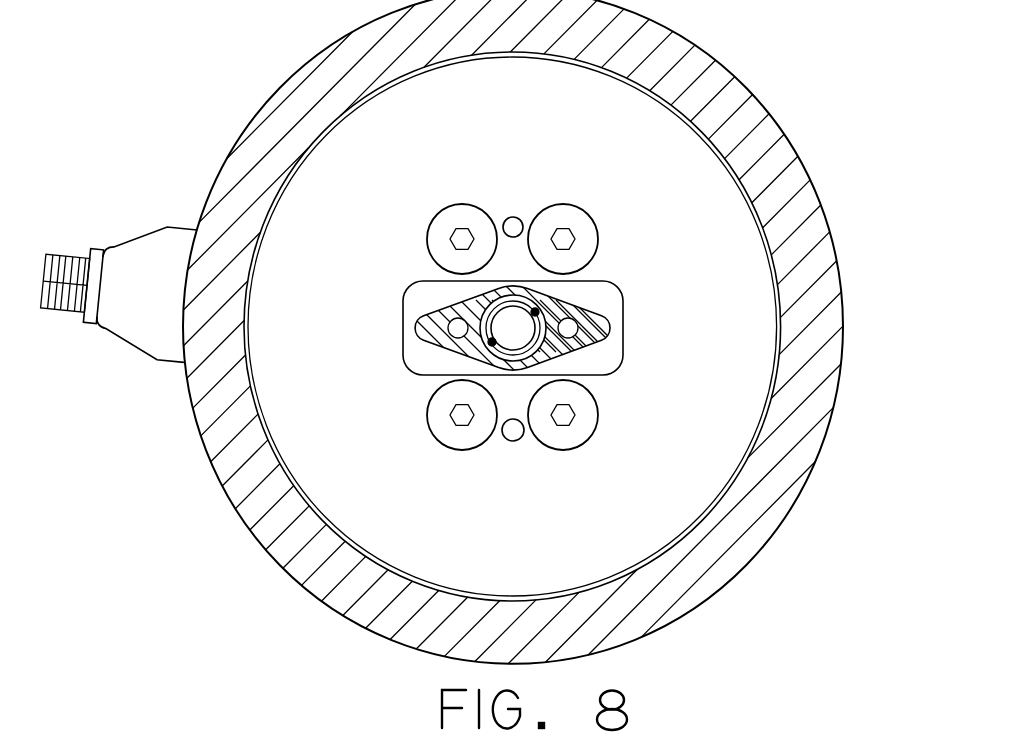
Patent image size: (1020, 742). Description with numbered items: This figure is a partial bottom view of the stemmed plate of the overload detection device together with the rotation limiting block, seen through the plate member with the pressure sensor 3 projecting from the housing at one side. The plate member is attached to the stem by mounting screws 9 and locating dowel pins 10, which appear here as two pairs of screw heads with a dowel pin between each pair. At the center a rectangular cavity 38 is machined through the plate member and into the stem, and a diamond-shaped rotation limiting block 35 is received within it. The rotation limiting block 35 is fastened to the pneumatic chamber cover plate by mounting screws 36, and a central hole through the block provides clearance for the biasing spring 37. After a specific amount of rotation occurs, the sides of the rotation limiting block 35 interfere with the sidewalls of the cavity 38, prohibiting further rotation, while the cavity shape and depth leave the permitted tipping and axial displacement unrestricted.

The pressure sensor 3 is at (143, 250).
The mounting screws 9 is at (440, 237).
The locating dowel pins 10 is at (517, 218).
The rotation limiting block 35 is at (597, 333).
The mounting screws 36 is at (457, 323).
The spring 37 is at (438, 354).
The cavity 38 is at (602, 296).